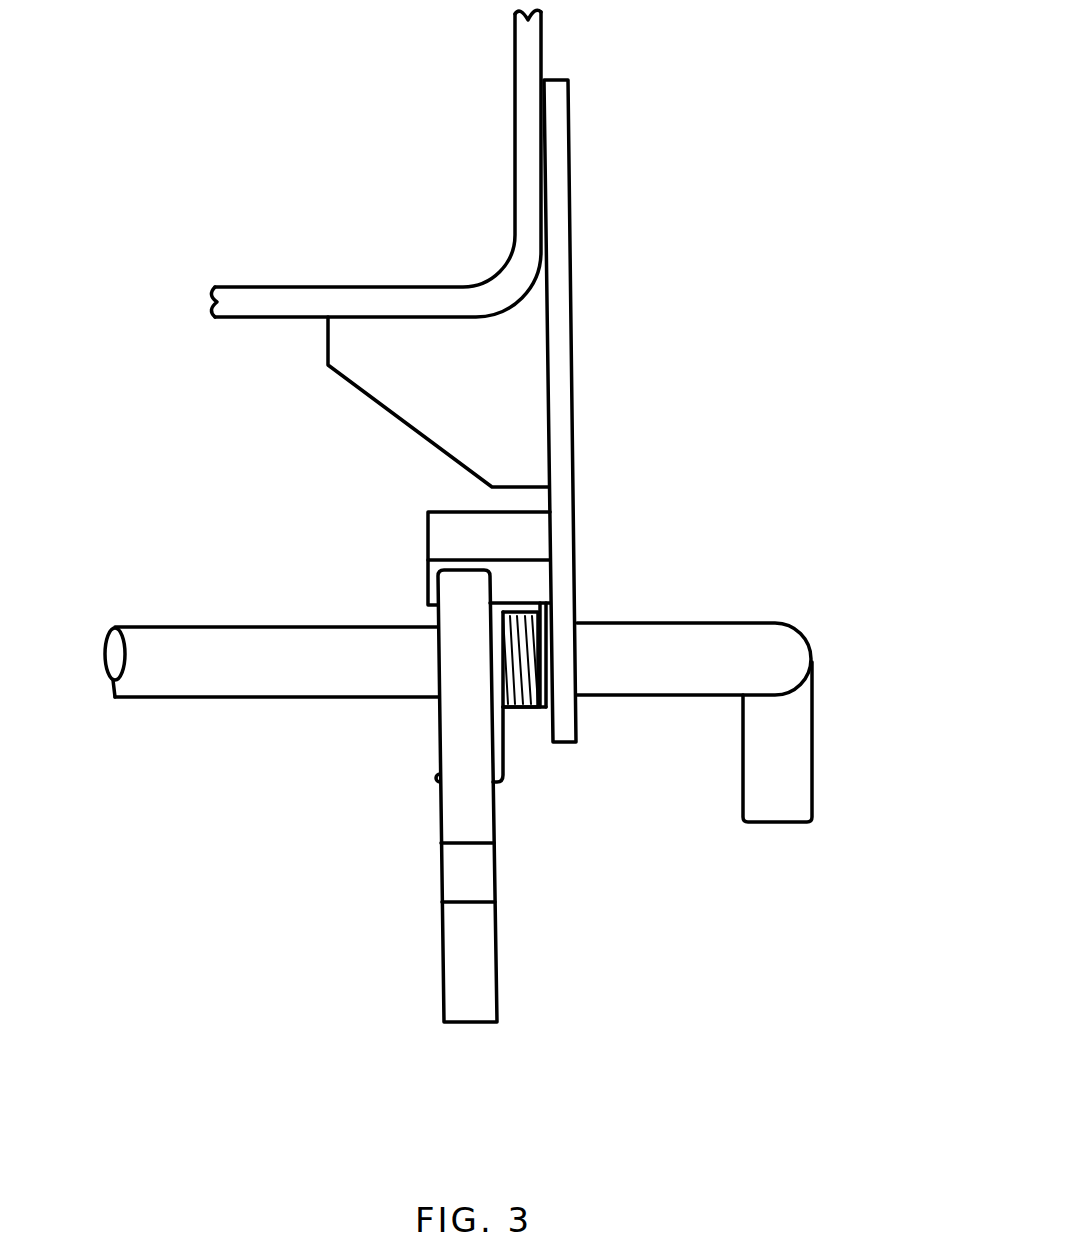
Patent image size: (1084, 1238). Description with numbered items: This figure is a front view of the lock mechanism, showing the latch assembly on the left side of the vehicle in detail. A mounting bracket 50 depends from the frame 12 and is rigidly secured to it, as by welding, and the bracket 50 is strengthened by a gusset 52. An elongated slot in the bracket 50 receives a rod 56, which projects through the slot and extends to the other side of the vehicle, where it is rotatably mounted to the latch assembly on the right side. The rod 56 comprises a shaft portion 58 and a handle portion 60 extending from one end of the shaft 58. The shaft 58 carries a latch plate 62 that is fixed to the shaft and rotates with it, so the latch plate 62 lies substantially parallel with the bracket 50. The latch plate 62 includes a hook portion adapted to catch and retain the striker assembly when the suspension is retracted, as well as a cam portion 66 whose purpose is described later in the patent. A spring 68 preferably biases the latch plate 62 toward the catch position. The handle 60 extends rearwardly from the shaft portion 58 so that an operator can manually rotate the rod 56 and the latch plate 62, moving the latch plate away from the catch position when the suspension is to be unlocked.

The frame 12 is at (528, 50).
The mounting bracket 50 is at (557, 372).
The gusset 52 is at (390, 383).
The rod 56 is at (263, 680).
The shaft portion 58 is at (343, 643).
The handle portion 60 is at (797, 743).
The latch plate 62 is at (478, 951).
The cam portion 66 is at (443, 536).
The spring 68 is at (525, 695).